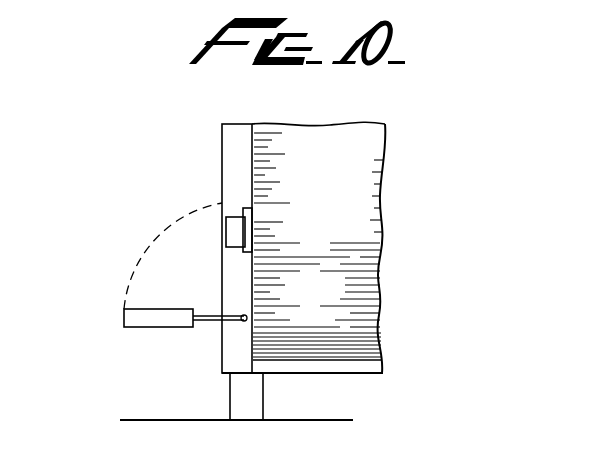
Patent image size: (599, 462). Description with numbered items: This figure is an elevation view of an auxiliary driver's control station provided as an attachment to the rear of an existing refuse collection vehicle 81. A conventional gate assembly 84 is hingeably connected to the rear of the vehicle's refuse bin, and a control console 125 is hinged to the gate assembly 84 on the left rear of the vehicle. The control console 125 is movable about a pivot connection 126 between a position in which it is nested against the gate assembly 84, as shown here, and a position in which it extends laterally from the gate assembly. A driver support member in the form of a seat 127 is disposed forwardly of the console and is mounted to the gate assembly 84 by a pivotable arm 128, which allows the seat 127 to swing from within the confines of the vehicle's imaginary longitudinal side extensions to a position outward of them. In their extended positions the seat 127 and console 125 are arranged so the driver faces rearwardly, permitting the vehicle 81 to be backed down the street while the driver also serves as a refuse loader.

The refuse collection vehicle 81 is at (196, 164).
The gate assembly 84 is at (360, 169).
The control console 125 is at (236, 227).
The pivot connection 126 is at (246, 246).
The seat 127 is at (148, 318).
The pivotable arm 128 is at (255, 304).